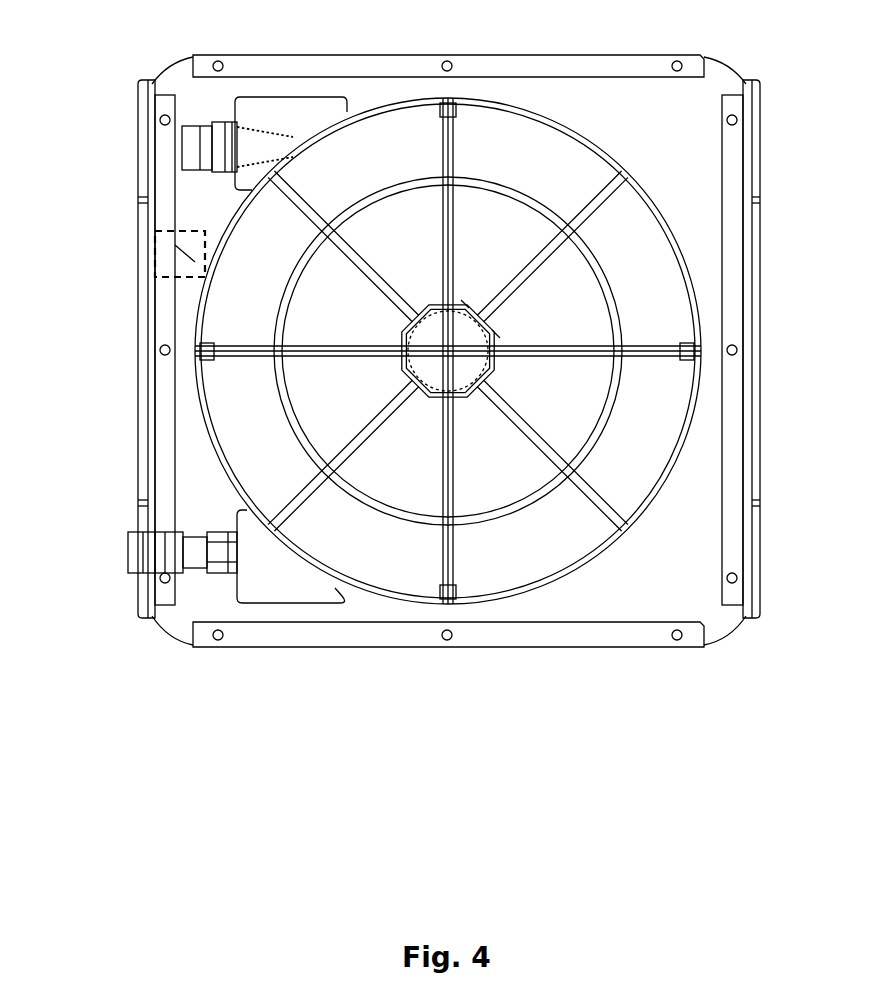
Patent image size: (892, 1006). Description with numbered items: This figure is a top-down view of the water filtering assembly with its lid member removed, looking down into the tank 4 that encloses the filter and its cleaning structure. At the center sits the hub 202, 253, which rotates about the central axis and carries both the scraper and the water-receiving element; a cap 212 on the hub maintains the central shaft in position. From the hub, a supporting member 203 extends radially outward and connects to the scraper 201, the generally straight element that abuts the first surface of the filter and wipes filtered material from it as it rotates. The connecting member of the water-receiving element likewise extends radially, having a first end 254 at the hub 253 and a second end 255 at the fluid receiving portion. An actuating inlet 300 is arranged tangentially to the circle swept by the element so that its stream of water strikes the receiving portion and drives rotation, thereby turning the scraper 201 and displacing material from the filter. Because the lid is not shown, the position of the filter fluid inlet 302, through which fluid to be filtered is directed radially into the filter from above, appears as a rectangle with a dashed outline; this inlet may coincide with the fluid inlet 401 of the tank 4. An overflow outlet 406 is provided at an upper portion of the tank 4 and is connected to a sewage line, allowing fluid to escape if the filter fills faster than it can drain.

The tank 4 is at (719, 62).
The scraper 201 is at (213, 362).
The hub 202 is at (473, 393).
The supporting member 203 is at (590, 217).
The cap 212 is at (423, 360).
The central hub 253 is at (460, 303).
The first end 254 is at (497, 331).
The second end 255 is at (693, 347).
The actuating inlet 300 is at (269, 136).
The filter fluid inlet 302 is at (201, 262).
The fluid inlet 401 is at (181, 252).
The overflow outlet 406 is at (255, 575).